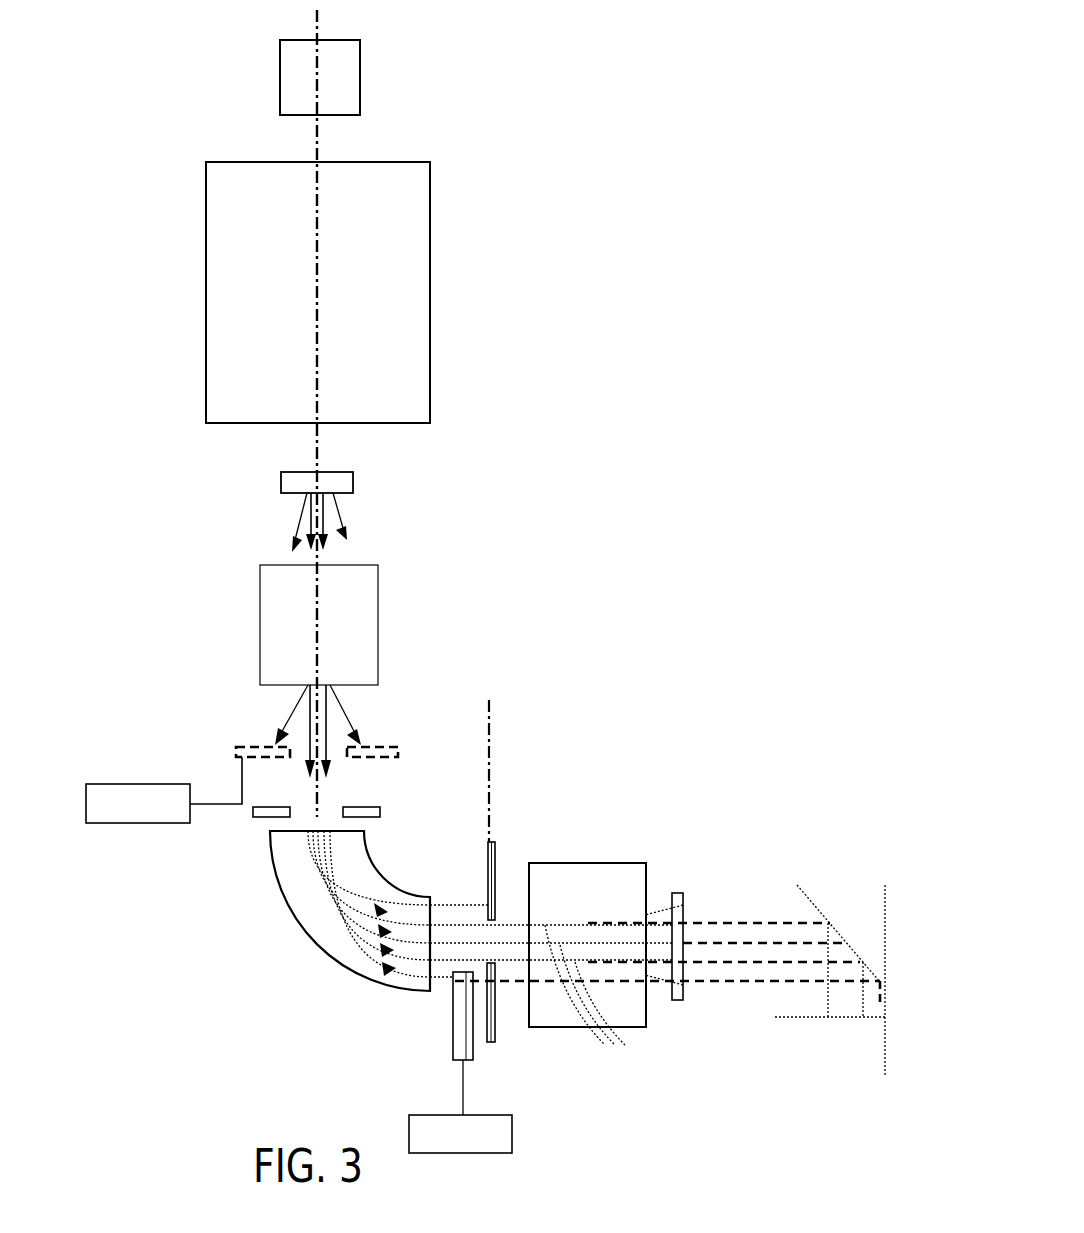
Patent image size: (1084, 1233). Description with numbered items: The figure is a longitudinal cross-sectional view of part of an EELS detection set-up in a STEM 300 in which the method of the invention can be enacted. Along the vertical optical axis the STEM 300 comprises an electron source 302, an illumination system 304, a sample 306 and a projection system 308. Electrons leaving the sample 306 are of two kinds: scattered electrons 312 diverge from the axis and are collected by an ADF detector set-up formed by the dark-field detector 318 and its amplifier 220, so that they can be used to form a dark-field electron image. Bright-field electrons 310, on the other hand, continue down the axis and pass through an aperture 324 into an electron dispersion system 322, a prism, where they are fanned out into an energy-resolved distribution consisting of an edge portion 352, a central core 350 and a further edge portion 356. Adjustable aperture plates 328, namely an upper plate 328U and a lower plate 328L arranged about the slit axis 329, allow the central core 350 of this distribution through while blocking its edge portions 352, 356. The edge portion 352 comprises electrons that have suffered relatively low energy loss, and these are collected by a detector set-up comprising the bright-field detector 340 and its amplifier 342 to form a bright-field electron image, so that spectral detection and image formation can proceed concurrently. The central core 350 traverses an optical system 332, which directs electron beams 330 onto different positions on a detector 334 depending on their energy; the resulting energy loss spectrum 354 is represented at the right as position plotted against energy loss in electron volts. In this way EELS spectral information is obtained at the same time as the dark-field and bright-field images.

The STEM 300 is at (597, 48).
The electron source 302 is at (360, 75).
The illumination system 304 is at (430, 277).
The sample 306 is at (281, 482).
The projection system 308 is at (378, 645).
The bright-field electrons 310 is at (330, 512).
The scattered electrons 312 is at (298, 512).
The dark-field detector 318 is at (398, 752).
The amplifier 220 is at (100, 784).
The aperture 324 is at (253, 812).
The electron dispersion system 322 is at (310, 935).
The adjustable aperture plates 328 is at (466, 840).
The upper adjustable aperture plate 328U is at (495, 845).
The lower adjustable aperture plate 328L is at (495, 1040).
The slit axis 329 is at (492, 722).
The electron beams 330 is at (603, 994).
The optical system 332 is at (615, 863).
The detector 334 is at (680, 1002).
The bright-field detector 340 is at (452, 1038).
The amplifier 342 is at (512, 1135).
The central core 350 is at (500, 895).
The edge portion 352 is at (447, 990).
The energy loss spectrum 354 is at (810, 850).
The edge portion 356 is at (488, 900).